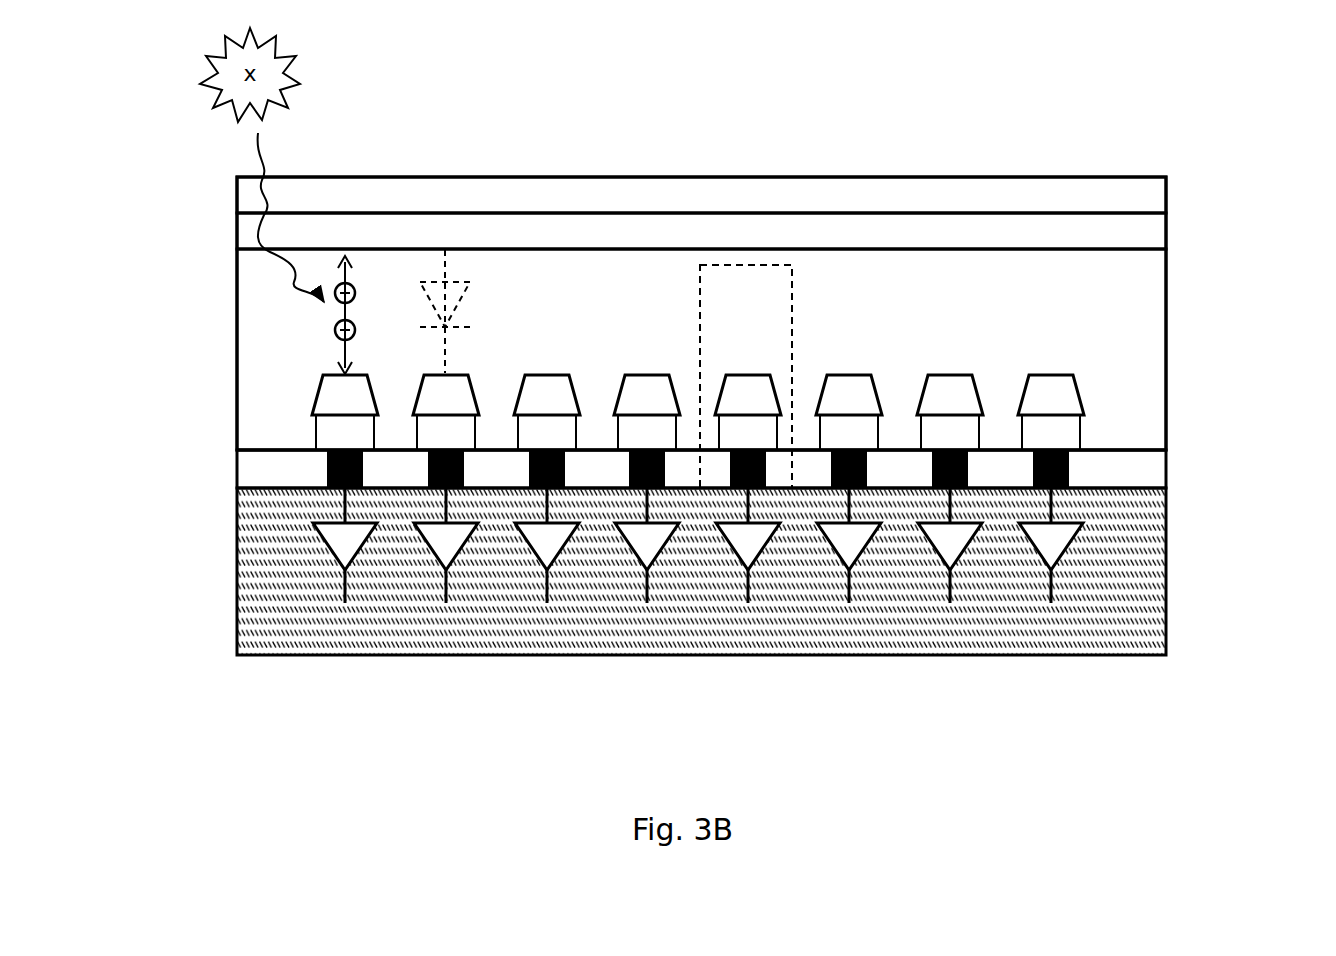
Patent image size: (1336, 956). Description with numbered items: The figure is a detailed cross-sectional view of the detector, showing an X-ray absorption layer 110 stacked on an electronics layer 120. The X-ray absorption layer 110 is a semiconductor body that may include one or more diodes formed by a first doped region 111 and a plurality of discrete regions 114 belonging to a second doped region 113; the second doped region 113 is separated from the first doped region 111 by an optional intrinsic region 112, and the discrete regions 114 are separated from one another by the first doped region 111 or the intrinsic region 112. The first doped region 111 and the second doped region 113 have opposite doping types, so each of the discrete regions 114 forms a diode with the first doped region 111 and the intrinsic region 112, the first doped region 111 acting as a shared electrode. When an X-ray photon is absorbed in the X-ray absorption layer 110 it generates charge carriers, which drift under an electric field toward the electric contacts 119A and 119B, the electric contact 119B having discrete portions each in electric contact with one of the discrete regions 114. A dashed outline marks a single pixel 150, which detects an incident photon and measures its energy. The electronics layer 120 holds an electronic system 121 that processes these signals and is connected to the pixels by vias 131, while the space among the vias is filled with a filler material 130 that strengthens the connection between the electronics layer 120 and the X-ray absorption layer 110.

The X-ray absorption layer 110 is at (227, 213).
The first doped region 111 is at (1172, 230).
The intrinsic region 112 is at (1172, 303).
The second doped region 113 is at (1178, 375).
The discrete regions 114 is at (698, 395).
The electric contact 119A is at (1092, 196).
The electric contact 119B is at (698, 432).
The electronics layer 120 is at (227, 488).
The electronic system 121 is at (1080, 549).
The filler material 130 is at (1172, 489).
The vias 131 is at (320, 467).
The pixel 150 is at (746, 376).